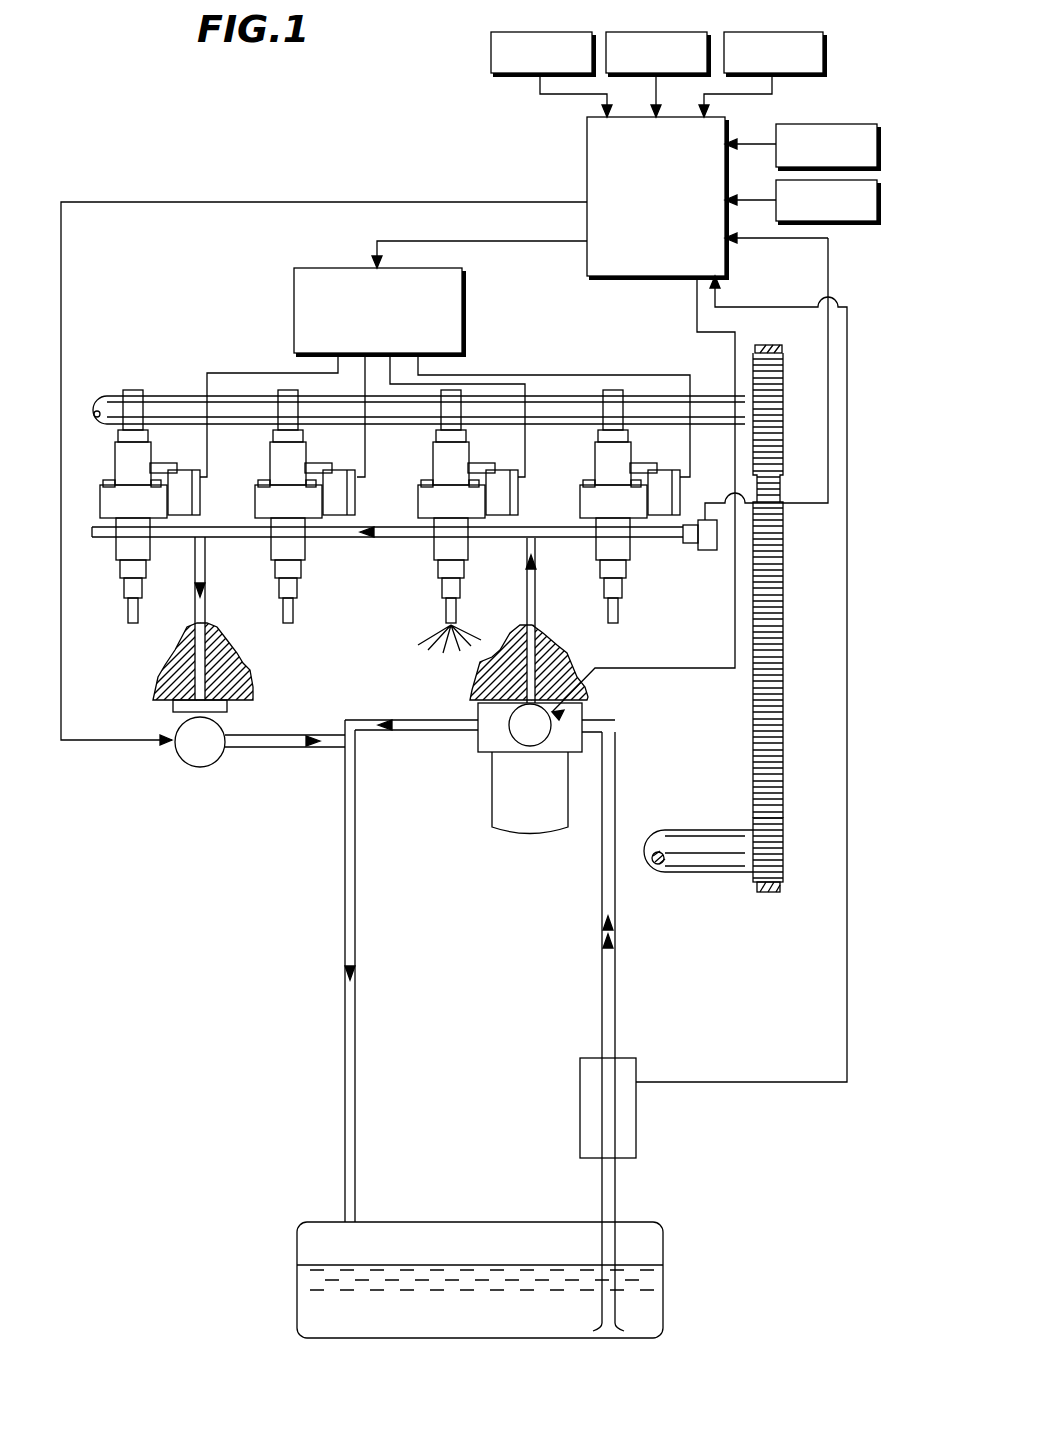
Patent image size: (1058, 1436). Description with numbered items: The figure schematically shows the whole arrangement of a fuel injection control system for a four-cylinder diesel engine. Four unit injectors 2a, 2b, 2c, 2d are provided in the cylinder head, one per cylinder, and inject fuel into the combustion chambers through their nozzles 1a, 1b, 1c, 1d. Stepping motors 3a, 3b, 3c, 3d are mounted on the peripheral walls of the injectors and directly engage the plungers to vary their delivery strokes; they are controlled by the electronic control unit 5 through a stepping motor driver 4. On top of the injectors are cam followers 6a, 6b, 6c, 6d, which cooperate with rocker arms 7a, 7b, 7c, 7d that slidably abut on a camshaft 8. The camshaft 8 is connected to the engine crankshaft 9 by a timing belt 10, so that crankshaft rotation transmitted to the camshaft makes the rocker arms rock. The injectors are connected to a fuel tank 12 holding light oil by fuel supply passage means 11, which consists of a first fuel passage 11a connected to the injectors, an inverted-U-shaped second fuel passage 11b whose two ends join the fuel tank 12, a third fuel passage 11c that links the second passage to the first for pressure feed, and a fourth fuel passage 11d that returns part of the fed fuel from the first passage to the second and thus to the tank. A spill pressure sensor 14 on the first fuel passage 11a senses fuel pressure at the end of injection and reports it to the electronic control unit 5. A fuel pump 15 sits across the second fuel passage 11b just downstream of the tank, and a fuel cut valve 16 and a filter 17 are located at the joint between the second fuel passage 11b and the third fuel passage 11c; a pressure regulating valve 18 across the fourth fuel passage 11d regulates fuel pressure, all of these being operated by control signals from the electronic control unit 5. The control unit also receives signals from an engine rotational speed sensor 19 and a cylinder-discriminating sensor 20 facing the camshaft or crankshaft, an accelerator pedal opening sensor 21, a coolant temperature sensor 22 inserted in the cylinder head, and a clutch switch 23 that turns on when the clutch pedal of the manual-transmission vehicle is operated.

The nozzle 1a is at (130, 617).
The nozzle 1b is at (285, 617).
The nozzle 1c is at (457, 612).
The nozzle 1d is at (620, 612).
The unit injector 2a is at (120, 477).
The unit injector 2b is at (280, 477).
The unit injector 2c is at (438, 477).
The unit injector 2d is at (600, 478).
The stepping motor 3a is at (192, 473).
The stepping motor 3b is at (342, 475).
The stepping motor 3c is at (508, 475).
The stepping motor 3d is at (668, 475).
The stepping motor driver 4 is at (294, 295).
The electronic control unit (ECU) 5 is at (587, 145).
The cam follower 6a is at (118, 437).
The cam follower 6b is at (273, 437).
The cam follower 6c is at (467, 440).
The cam follower 6d is at (630, 440).
The rocker arm 7a is at (137, 392).
The rocker arm 7b is at (288, 393).
The rocker arm 7c is at (453, 395).
The rocker arm 7d is at (616, 395).
The camshaft 8 is at (712, 397).
The crankshaft 9 is at (680, 872).
The timing belt 10 is at (783, 625).
The fuel supply passage means 11 is at (378, 575).
The first fuel passage 11a is at (317, 540).
The second fuel passage 11b is at (343, 717).
The third fuel passage 11c is at (510, 640).
The fourth fuel passage 11d is at (267, 730).
The fuel tank 12 is at (663, 1243).
The spill pressure sensor 14 is at (683, 543).
The fuel pump 15 is at (636, 1125).
The fuel cut valve 16 is at (548, 735).
The filter 17 is at (492, 793).
The pressure regulating valve 18 is at (176, 752).
The engine rotational speed (Ne) sensor 19 is at (560, 30).
The cylinder-discriminating sensor 20 is at (675, 30).
The accelerator pedal opening (θACC) sensor 21 is at (795, 30).
The coolant temperature (TW) sensor 22 is at (805, 124).
The clutch switch (CLSW) 23 is at (840, 230).